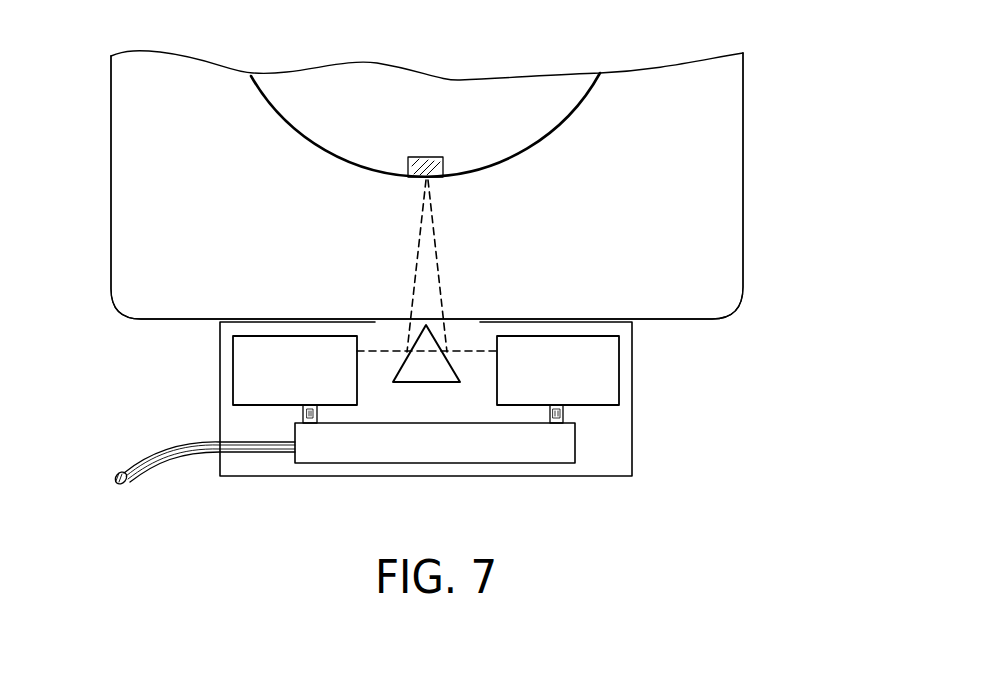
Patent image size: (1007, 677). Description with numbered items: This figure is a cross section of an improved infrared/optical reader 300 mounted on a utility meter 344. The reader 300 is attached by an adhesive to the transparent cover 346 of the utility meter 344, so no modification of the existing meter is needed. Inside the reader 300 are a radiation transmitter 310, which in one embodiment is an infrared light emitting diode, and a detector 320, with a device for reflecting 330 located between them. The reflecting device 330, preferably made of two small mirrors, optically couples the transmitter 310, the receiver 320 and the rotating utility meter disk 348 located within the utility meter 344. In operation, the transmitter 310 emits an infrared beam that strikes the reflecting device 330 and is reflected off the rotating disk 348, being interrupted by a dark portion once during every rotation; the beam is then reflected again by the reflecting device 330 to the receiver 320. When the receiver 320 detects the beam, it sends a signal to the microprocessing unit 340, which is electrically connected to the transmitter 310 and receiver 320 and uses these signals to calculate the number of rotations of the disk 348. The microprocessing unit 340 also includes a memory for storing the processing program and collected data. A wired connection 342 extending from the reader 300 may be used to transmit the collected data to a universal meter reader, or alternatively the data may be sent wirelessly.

The radiation reader 300 is at (610, 478).
The radiation transmitter 310 is at (619, 362).
The detector 320 is at (233, 372).
The device for reflecting 330 is at (433, 333).
The microprocessing unit 340 is at (337, 466).
The wired connection 342 is at (128, 481).
The utility meter 344 is at (752, 107).
The transparent cover 346 is at (107, 255).
The rotating utility meter disk 348 is at (327, 157).